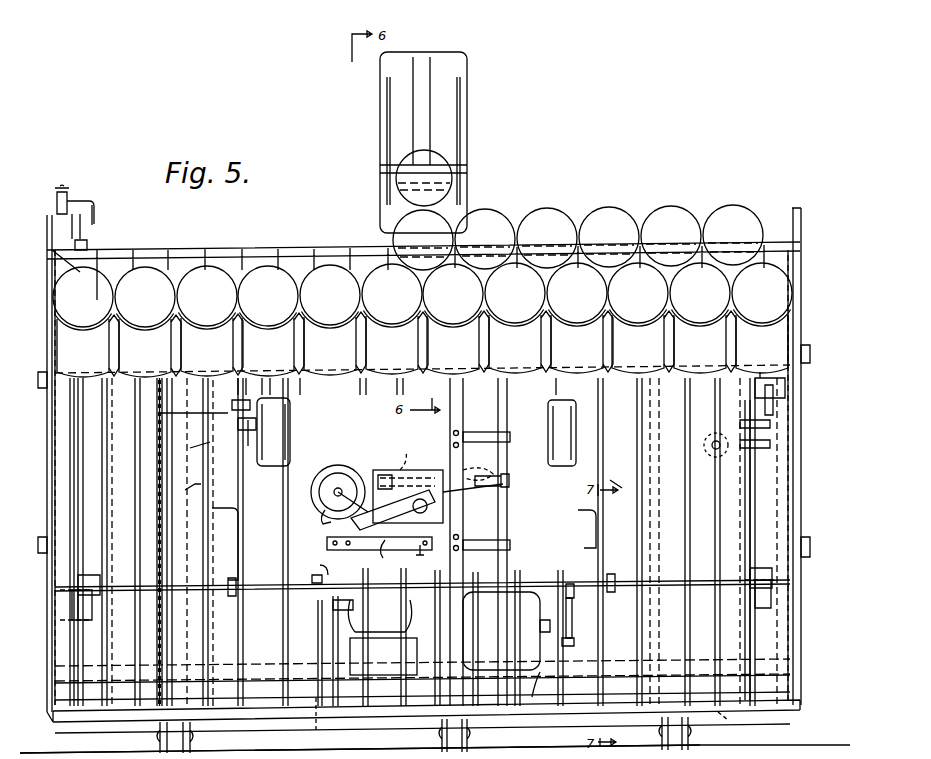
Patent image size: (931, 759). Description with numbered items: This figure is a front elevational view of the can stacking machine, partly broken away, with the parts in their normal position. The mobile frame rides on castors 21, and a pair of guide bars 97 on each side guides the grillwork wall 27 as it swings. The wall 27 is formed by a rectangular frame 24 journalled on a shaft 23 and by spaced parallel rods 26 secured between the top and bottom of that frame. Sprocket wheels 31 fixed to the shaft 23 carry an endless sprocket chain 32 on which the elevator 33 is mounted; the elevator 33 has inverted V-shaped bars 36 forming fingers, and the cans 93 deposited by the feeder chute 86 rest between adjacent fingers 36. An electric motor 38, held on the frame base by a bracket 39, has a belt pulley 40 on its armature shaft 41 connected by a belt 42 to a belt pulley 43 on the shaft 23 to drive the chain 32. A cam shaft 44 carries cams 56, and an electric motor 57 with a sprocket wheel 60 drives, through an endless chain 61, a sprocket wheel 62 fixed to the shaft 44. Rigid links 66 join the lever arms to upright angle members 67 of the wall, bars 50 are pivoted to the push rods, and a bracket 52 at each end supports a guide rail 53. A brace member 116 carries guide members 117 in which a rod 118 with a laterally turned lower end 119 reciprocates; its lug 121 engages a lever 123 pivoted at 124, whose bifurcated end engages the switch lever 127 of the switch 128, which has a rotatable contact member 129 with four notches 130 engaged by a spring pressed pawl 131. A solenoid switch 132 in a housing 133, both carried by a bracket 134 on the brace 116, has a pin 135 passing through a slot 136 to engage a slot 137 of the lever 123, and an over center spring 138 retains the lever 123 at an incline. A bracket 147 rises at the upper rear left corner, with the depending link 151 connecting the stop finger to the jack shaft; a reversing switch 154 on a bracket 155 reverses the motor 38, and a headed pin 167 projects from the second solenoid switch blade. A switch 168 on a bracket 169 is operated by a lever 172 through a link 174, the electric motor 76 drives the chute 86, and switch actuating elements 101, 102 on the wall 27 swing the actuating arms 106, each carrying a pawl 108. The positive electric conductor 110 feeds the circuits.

The feeder chute 86 is at (470, 134).
The cans 93 is at (244, 315).
The depending link 151 is at (64, 196).
The bracket 147 is at (92, 214).
The headed pin 167 is at (102, 242).
The guide bars 97 is at (806, 552).
The castors 21 is at (692, 746).
The sprocket wheels 31 is at (730, 724).
The grillwork wall 27 is at (258, 708).
The rectangular frame 24 is at (397, 724).
The belt pulley 43 is at (331, 723).
The shaft 23 is at (390, 700).
The laterally turned lower end 119 is at (532, 700).
The positive electric conductor 110 is at (360, 752).
The rods 26 is at (272, 608).
The cam shaft 44 is at (256, 591).
The reversing switch 154 is at (260, 462).
The endless sprocket chain 32 is at (245, 400).
The link 174 is at (198, 413).
The lever 172 is at (235, 426).
The upright angle member 67 is at (603, 440).
The bar 50 is at (738, 641).
The rigid link 66 is at (205, 484).
The cam 56 is at (578, 525).
The guide rail 53 is at (760, 570).
The bracket 52 is at (783, 585).
The switch 128 is at (313, 499).
The rotatable contact member 129 is at (340, 466).
The switch lever 127 is at (360, 488).
The notches 130 is at (324, 515).
The spring pressed pawl 131 is at (393, 510).
The over center spring 138 is at (385, 472).
The solenoid switch 132 is at (402, 454).
The housing 133 is at (433, 464).
The pin 135 is at (430, 511).
The bracket 134 is at (379, 542).
The lever 123 is at (387, 553).
The slot 137 is at (430, 556).
The brace member 116 is at (451, 422).
The rod 118 is at (508, 515).
The guide members 117 is at (500, 527).
The slot 136 is at (470, 462).
The lug 121 is at (510, 468).
The pivot 124 is at (503, 484).
The switch 168 is at (560, 464).
The bracket 169 is at (560, 396).
The bracket 155 is at (269, 388).
The bars 36 is at (317, 388).
The elevator 33 is at (385, 385).
The electric motor 76 is at (712, 473).
The switch actuating element 101 is at (770, 369).
The actuating arm 106 is at (773, 398).
The switch actuating element 102 is at (770, 424).
The pawl 108 is at (770, 444).
The electric motor 57 is at (525, 590).
The sprocket wheel 62 is at (579, 575).
The endless chain 61 is at (579, 617).
The sprocket wheel 60 is at (572, 645).
The bracket 39 is at (383, 656).
The electric motor 38 is at (416, 622).
The belt 42 is at (330, 630).
The belt pulley 40 is at (306, 575).
The armature shaft 41 is at (326, 565).